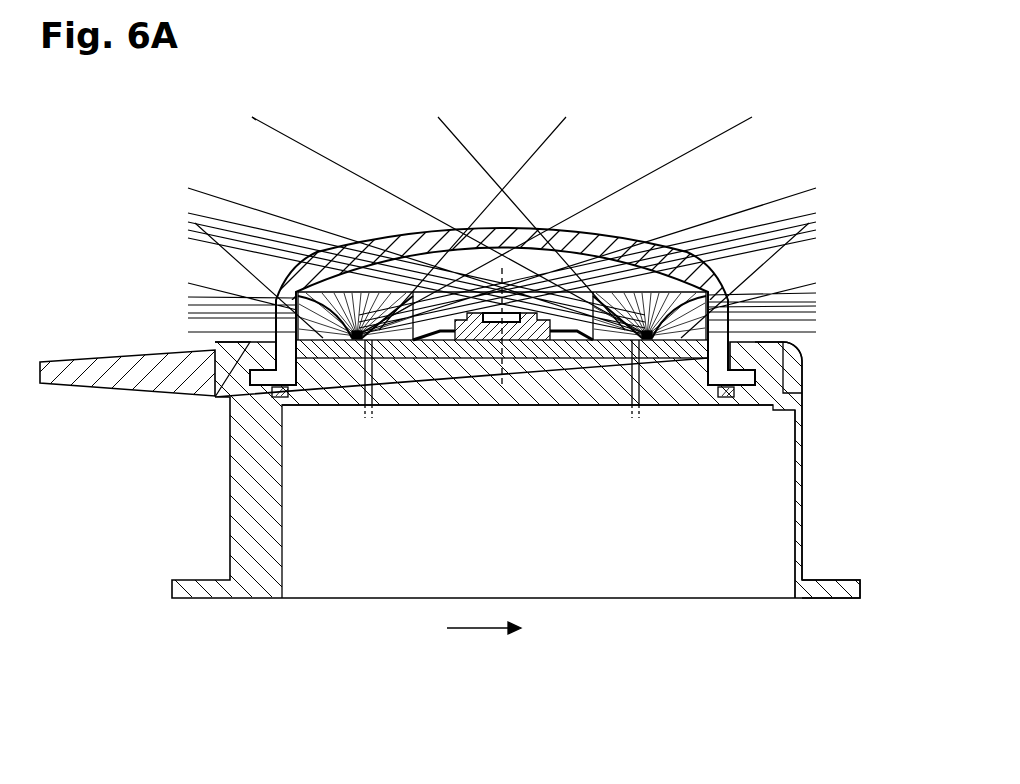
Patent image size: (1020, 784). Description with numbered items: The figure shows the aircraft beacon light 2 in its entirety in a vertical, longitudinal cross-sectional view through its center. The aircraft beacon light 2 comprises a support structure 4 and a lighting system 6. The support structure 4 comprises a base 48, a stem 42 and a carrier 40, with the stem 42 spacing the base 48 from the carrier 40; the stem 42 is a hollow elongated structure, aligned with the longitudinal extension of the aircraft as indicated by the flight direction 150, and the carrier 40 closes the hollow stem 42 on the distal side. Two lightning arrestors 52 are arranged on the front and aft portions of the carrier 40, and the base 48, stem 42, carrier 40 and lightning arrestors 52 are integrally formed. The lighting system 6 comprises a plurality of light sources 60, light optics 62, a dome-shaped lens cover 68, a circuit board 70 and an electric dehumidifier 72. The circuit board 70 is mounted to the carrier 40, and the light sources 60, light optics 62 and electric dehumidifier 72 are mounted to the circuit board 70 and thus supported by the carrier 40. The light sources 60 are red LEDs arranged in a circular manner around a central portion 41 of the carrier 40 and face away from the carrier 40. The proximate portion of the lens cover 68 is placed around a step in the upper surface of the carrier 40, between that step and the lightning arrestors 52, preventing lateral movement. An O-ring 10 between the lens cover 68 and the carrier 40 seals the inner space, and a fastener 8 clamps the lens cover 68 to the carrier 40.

The aircraft beacon light 2 is at (334, 109).
The support structure 4 is at (510, 502).
The lighting system 6 is at (493, 274).
The fastener 8 is at (117, 388).
The O-ring 10 is at (280, 398).
The carrier 40 is at (398, 400).
The central portion 41 is at (527, 432).
The stem 42 is at (800, 482).
The base 48 is at (835, 588).
The lightning arrestors 52 is at (770, 350).
The light sources 60 is at (357, 343).
The light optics 62 is at (606, 341).
The lens cover 68 is at (400, 243).
The circuit board 70 is at (440, 350).
The electric dehumidifier 72 is at (489, 330).
The flight direction 150 is at (477, 636).